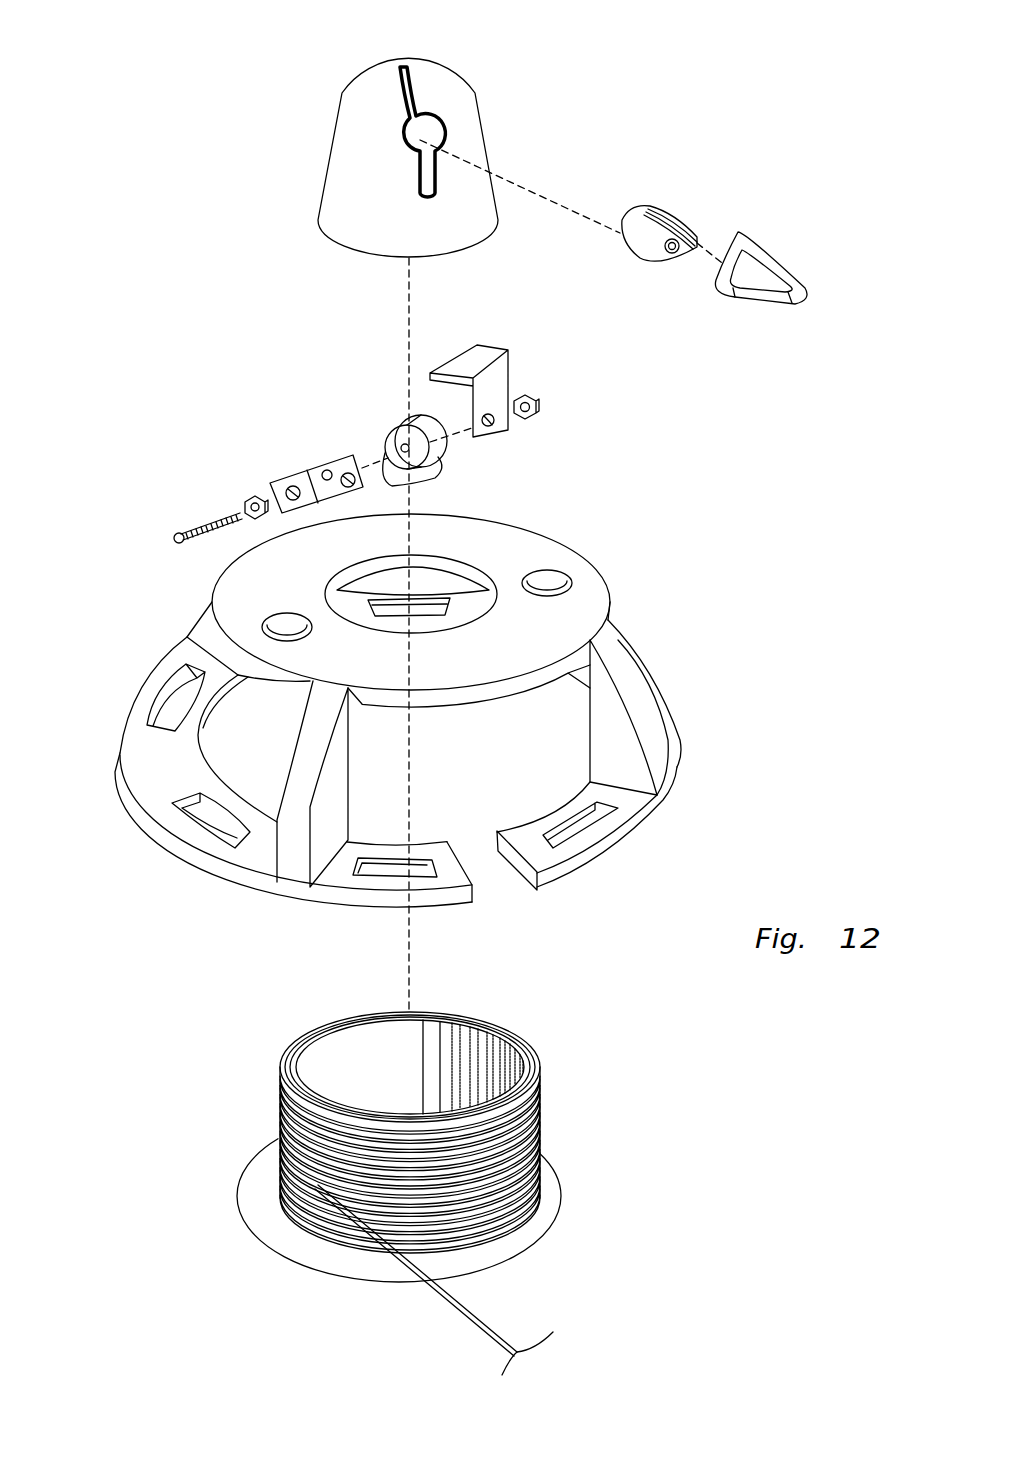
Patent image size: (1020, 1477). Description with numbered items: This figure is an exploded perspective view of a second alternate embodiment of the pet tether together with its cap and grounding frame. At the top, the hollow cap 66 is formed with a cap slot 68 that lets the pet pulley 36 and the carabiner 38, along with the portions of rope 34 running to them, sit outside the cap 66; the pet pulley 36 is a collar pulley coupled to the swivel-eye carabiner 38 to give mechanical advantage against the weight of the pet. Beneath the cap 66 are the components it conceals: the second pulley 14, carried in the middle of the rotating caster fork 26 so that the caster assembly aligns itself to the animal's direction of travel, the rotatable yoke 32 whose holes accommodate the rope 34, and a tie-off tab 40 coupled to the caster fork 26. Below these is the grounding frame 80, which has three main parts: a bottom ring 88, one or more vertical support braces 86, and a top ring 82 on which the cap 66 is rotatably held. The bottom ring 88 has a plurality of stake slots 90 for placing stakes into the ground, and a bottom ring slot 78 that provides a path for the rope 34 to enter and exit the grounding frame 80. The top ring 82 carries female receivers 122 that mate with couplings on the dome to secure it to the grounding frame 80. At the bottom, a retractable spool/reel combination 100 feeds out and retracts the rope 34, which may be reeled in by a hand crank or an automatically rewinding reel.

The second pulley 14 is at (402, 432).
The caster fork 26 is at (398, 447).
The yoke 32 is at (415, 487).
The rope 34 is at (275, 1157).
The pet pulley 36 is at (643, 230).
The carabiner 38 is at (767, 257).
The tie-off tab 40 is at (315, 476).
The cap 66 is at (457, 83).
The cap slot 68 is at (422, 128).
The bottom ring slot 78 is at (500, 880).
The grounding frame 80 is at (577, 614).
The top ring 82 is at (240, 587).
The vertical support brace 86 is at (662, 748).
The bottom ring 88 is at (180, 657).
The stake slots 90 is at (197, 815).
The retractable spool/reel combination 100 is at (556, 1188).
The top ring female receivers 122 is at (549, 590).